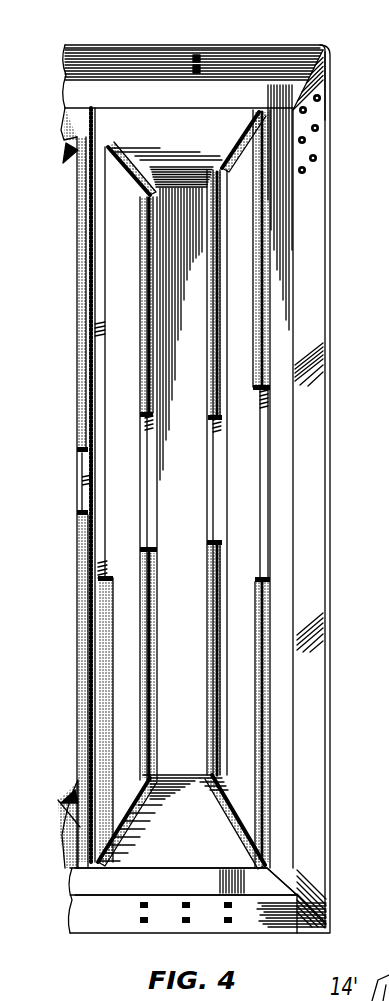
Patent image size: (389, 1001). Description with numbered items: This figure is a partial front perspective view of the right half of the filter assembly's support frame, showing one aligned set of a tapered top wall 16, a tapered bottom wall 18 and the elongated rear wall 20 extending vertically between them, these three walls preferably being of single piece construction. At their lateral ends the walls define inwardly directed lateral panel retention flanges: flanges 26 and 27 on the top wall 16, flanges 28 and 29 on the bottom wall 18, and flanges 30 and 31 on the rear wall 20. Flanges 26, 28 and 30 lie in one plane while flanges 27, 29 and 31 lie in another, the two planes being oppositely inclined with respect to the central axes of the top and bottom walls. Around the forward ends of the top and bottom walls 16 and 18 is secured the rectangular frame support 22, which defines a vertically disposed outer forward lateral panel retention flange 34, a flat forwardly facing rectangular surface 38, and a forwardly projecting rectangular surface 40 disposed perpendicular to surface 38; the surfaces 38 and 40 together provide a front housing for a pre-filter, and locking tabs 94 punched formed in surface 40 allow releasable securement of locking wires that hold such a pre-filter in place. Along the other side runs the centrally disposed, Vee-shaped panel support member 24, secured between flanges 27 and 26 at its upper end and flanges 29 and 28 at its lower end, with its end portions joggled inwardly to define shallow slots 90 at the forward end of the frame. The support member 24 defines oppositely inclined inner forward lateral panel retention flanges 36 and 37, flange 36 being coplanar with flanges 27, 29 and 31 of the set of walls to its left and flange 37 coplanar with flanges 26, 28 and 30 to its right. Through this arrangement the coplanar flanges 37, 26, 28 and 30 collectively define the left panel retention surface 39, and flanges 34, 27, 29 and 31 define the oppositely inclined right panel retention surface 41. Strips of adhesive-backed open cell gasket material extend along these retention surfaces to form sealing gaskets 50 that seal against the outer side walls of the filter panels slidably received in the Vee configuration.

The tapered top wall 16 is at (132, 116).
The tapered bottom wall 18 is at (214, 858).
The elongated rear wall 20 is at (251, 527).
The rectangular frame support 22 is at (297, 37).
The panel support member 24 is at (97, 572).
The lateral panel retention flange 26 is at (133, 150).
The lateral panel retention flange 27 is at (231, 158).
The lateral panel retention flange 28 is at (130, 817).
The lateral panel retention flange 29 is at (227, 803).
The lateral panel retention flange 30 is at (147, 472).
The lateral panel retention flange 31 is at (215, 445).
The outer forward lateral panel retention flange 34 is at (268, 478).
The inner forward lateral panel retention flange 36 is at (82, 490).
The inner forward lateral panel retention flange 37 is at (100, 532).
The flat forwardly facing rectangular surface 38 is at (217, 95).
The left panel retention surface 39 is at (110, 355).
The forwardly projecting rectangular surface 40 is at (313, 518).
The right panel retention surface 41 is at (72, 462).
The sealing gasket 50 is at (80, 228).
The shallow slot 90 is at (270, 860).
The locking tab 94 is at (315, 127).